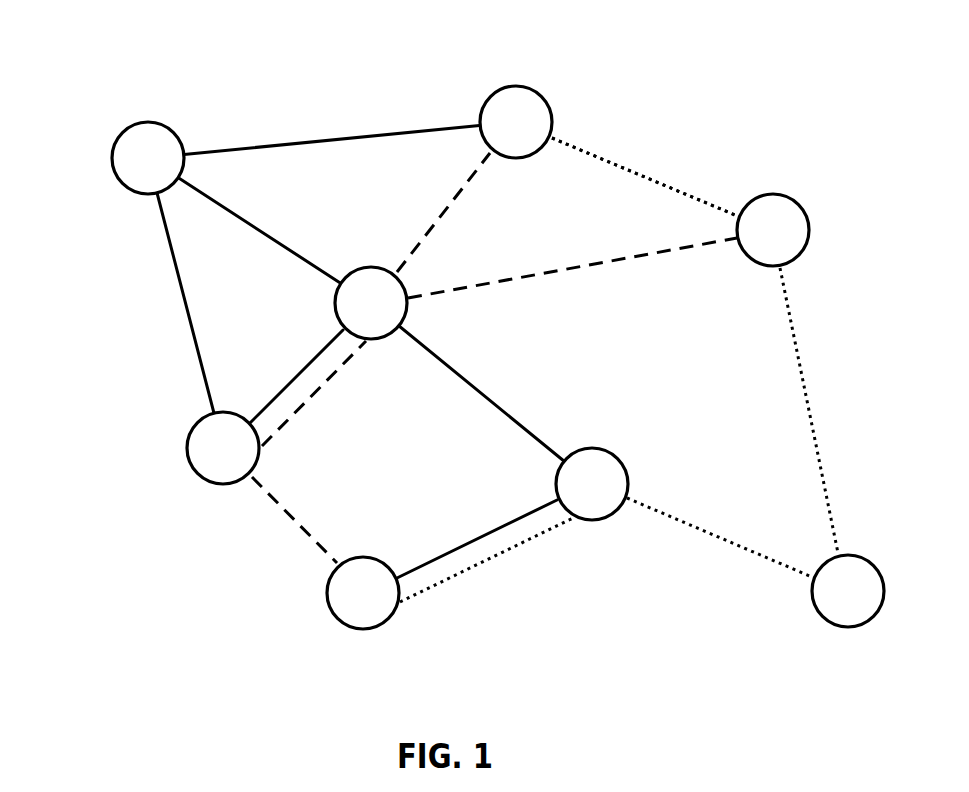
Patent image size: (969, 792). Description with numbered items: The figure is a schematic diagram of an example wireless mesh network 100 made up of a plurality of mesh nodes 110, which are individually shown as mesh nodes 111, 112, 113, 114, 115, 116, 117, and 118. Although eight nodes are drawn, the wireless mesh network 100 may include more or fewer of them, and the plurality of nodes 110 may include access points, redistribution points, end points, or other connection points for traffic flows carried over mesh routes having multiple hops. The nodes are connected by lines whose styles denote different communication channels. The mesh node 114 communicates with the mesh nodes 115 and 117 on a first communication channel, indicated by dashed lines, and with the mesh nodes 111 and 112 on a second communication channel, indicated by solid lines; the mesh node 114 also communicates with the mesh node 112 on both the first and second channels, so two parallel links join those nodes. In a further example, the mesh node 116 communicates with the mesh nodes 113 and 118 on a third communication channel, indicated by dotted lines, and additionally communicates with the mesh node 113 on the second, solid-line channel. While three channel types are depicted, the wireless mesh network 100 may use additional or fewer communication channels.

The wireless mesh network 100 is at (434, 302).
The plurality of mesh nodes 110 is at (669, 144).
The mesh node 111 is at (111, 153).
The mesh node 112 is at (181, 442).
The mesh node 113 is at (325, 600).
The mesh node 114 is at (329, 310).
The mesh node 115 is at (560, 116).
The mesh node 116 is at (617, 460).
The mesh node 117 is at (799, 206).
The mesh node 118 is at (806, 598).